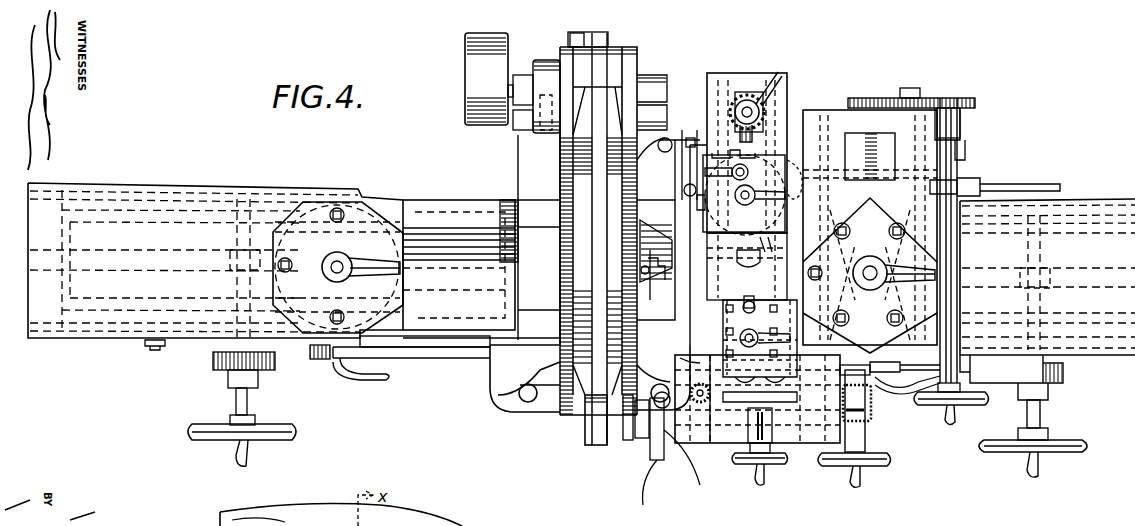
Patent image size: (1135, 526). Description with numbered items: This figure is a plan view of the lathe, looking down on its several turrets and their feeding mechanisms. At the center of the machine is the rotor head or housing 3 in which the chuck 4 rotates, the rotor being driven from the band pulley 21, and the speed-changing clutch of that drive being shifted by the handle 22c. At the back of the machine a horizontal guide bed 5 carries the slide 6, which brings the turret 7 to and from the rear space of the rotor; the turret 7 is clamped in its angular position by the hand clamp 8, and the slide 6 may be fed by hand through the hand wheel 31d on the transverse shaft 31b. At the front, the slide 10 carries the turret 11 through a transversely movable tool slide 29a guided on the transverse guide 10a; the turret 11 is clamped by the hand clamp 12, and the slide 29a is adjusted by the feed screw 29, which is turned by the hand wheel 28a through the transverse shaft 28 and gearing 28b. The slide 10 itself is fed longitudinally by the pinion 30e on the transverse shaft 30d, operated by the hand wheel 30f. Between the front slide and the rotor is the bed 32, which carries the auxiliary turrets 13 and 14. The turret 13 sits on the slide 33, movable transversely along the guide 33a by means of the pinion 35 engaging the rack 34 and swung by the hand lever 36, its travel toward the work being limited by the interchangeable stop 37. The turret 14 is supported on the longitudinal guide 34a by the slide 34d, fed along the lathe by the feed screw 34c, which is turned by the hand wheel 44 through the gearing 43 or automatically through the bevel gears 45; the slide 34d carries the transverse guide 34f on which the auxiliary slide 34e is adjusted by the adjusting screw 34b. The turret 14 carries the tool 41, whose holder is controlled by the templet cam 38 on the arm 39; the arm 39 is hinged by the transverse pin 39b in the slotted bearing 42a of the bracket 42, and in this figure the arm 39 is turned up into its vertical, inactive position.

The rotor head or housing 3 is at (613, 238).
The chuck 4 is at (656, 260).
The horizontal guide bed 5 is at (459, 265).
The slide 6 is at (215, 260).
The turret 7 is at (338, 267).
The hand clamp 8 is at (358, 270).
The slide 10 is at (1047, 277).
The transverse guide 10a is at (870, 227).
The turret 11 is at (870, 275).
The hand clamp 12 is at (893, 282).
The auxiliary turret 13 is at (752, 192).
The auxiliary turret 14 is at (760, 341).
The band pulley 21 is at (512, 83).
The handle 22c is at (590, 429).
The transverse shaft 28 is at (957, 298).
The hand wheel 28a is at (948, 404).
The gearing 28b is at (911, 114).
The feed screw 29 is at (862, 150).
The tool slide 29a is at (918, 188).
The transverse shaft 30d is at (1040, 412).
The pinion 30e is at (1050, 280).
The hand wheel 30f is at (1048, 454).
The transverse shaft 31b is at (250, 400).
The hand wheel 31d is at (298, 434).
The bed 32 is at (747, 266).
The slide 33 is at (780, 100).
The guide 33a is at (770, 257).
The rack 34 is at (745, 98).
The longitudinal guide 34a is at (718, 438).
The adjusting screw 34b is at (765, 422).
The feed screw 34c is at (700, 384).
The slide 34d is at (732, 459).
The auxiliary slide 34e is at (797, 397).
The transverse guide 34f is at (767, 465).
The pinion 35 is at (773, 79).
The hand lever 36 is at (753, 138).
The stop 37 is at (737, 256).
The cam 38 is at (628, 440).
The arm 39 is at (642, 438).
The transverse pin 39b is at (655, 491).
The tool 41 is at (749, 298).
The bracket 42 is at (662, 458).
The slotted bearing 42a is at (687, 451).
The gearing 43 is at (862, 408).
The hand wheel 44 is at (868, 468).
The bevel gears 45 is at (680, 358).